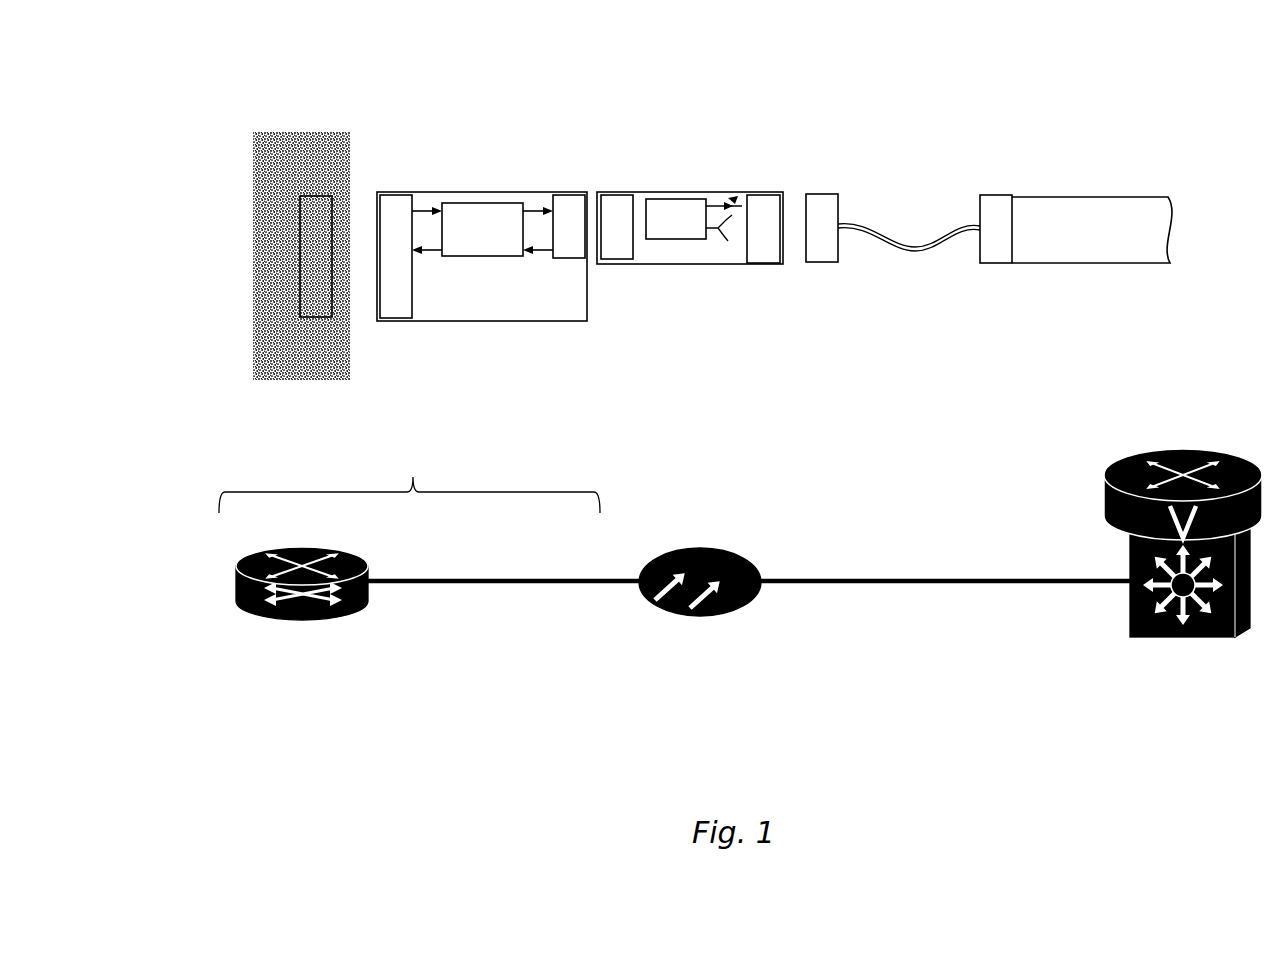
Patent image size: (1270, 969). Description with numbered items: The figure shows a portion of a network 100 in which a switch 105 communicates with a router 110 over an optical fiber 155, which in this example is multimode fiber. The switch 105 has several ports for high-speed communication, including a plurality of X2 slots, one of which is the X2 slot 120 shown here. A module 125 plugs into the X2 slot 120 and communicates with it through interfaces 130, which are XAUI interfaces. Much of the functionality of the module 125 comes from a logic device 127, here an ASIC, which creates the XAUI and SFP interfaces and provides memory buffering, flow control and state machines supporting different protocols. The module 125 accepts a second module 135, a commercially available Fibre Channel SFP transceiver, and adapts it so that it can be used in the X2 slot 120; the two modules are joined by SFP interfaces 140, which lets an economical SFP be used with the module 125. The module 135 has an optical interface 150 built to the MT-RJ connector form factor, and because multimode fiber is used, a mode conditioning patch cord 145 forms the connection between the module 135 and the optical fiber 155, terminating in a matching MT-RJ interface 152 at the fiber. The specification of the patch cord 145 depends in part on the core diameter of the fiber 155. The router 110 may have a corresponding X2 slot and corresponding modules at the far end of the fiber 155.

The network 100 is at (213, 115).
The switch 105 is at (335, 620).
The router 110 is at (1150, 637).
The X2 slot 120 is at (352, 387).
The module 125 is at (383, 333).
The logic device 127 is at (495, 217).
The interfaces 130 is at (325, 207).
The module 135 is at (597, 287).
The SFP interfaces 140 is at (573, 203).
The mode conditioning patch cord 145 is at (808, 290).
The optical interface 150 is at (778, 200).
The interface 152 is at (995, 205).
The optical fiber 155 is at (1107, 202).